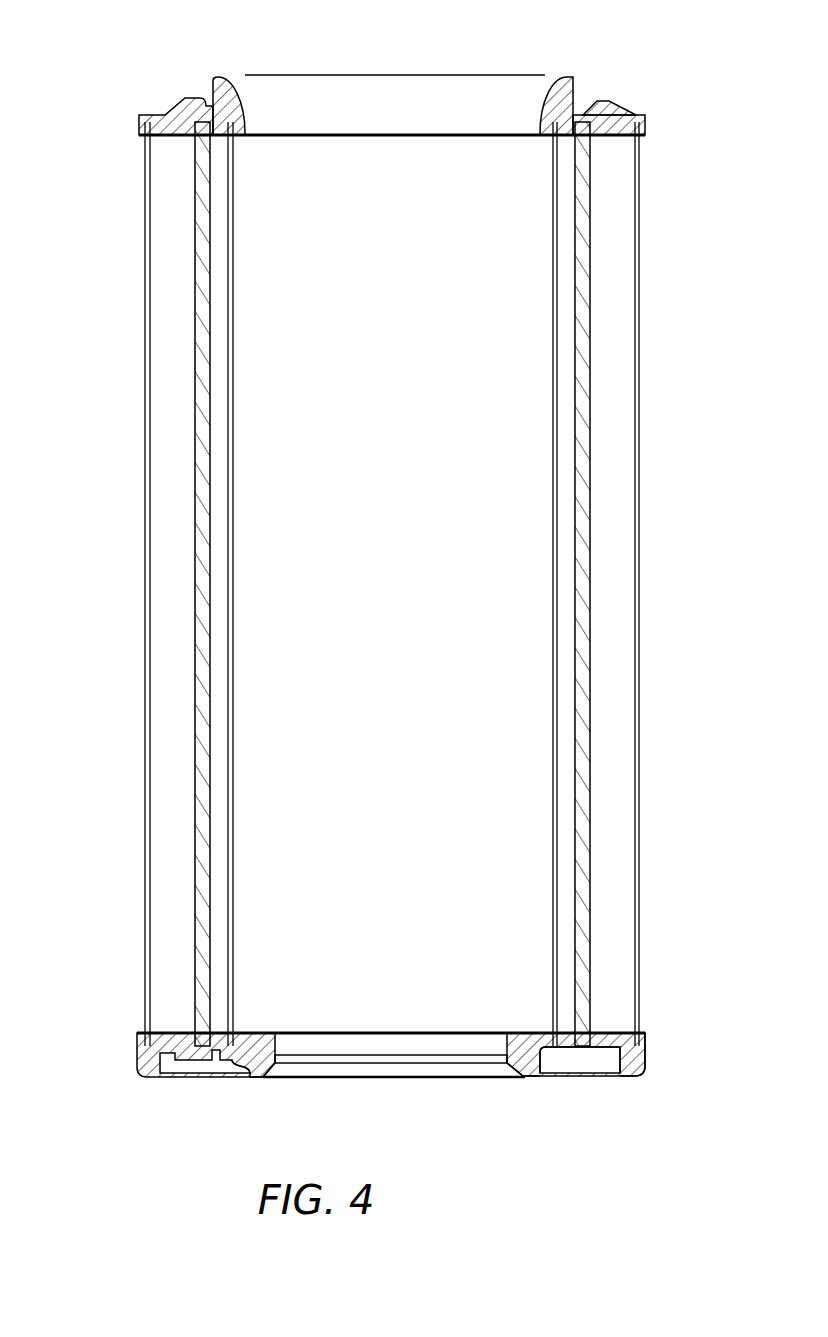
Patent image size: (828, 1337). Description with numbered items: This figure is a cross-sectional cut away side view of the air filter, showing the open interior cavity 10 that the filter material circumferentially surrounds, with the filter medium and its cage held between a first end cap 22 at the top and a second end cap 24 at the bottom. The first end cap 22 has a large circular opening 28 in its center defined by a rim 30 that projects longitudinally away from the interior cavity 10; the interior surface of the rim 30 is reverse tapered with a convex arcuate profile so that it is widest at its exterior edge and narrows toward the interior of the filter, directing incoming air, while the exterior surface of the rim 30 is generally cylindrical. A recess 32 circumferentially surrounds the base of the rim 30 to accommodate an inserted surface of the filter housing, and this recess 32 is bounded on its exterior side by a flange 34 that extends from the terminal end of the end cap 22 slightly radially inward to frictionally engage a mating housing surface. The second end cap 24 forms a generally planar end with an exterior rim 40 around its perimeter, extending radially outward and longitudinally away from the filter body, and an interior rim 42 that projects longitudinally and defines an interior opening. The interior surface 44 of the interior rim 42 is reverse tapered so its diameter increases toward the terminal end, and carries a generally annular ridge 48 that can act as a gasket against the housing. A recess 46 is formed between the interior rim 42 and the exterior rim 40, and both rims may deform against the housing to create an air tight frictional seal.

The interior cavity 10 is at (393, 526).
The first end cap 22 is at (134, 108).
The second end cap 24 is at (128, 1046).
The circular opening 28 is at (398, 96).
The rim 30 is at (239, 90).
The recess 32 is at (584, 108).
The flange 34 is at (612, 103).
The exterior rim 40 is at (641, 1070).
The interior rim 42 is at (536, 1063).
The interior surface 44 is at (262, 1072).
The recess 46 is at (565, 1052).
The ridge 48 is at (272, 1070).